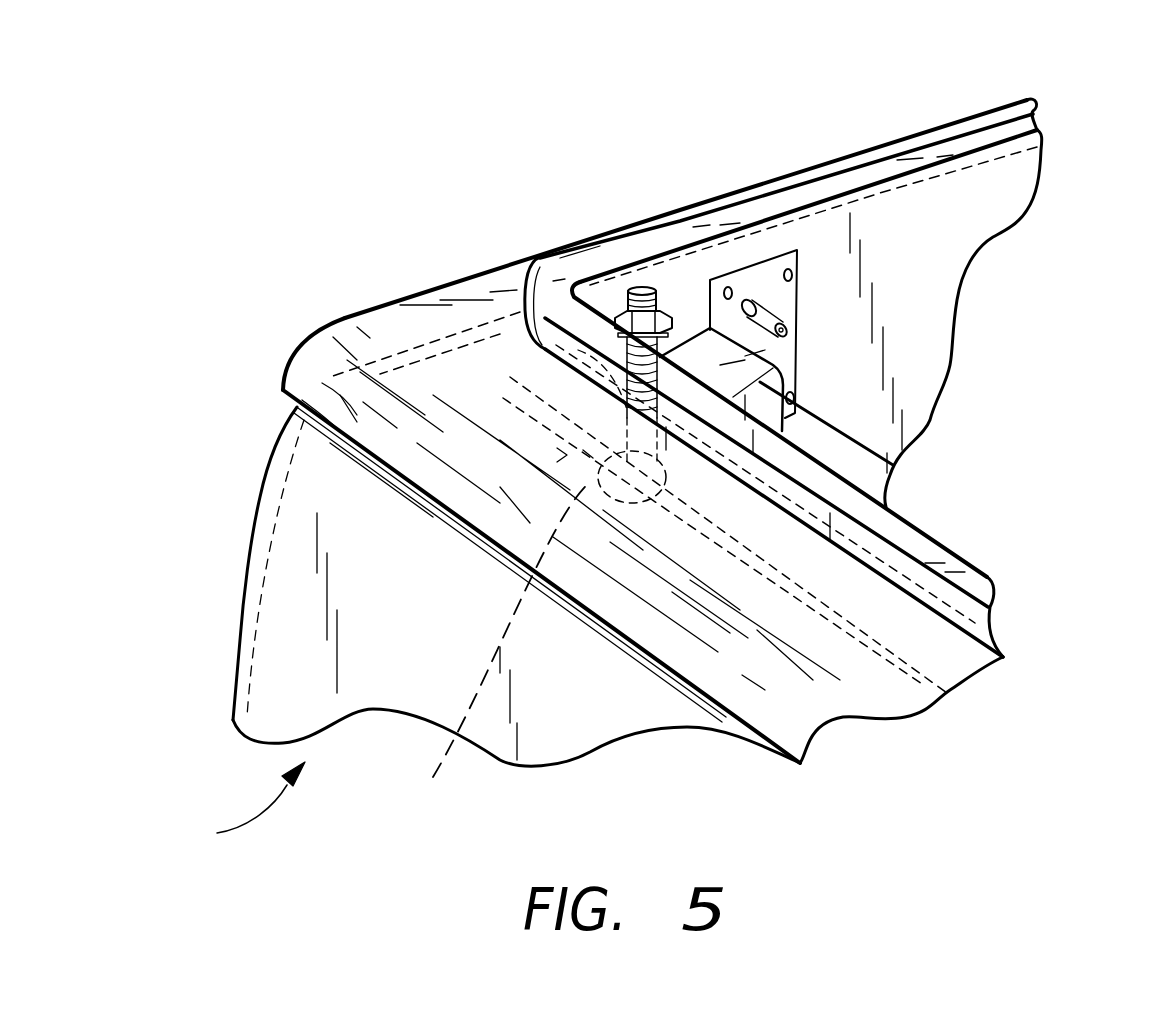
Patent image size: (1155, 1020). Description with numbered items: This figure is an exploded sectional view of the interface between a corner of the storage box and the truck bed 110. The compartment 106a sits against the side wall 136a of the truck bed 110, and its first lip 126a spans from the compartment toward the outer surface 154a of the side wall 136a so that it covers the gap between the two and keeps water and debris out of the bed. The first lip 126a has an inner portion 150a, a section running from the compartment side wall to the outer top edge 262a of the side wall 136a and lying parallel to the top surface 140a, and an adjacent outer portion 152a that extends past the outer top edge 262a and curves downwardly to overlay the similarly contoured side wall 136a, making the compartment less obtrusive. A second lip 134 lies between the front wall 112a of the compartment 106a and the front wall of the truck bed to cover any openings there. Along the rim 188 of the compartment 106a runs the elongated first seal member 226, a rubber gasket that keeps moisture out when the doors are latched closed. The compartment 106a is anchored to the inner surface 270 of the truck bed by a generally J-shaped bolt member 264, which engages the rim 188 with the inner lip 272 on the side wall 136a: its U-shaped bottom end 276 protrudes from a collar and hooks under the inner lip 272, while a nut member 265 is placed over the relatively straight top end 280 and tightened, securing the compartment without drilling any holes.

The truck bed 110 is at (232, 804).
The compartment 106a is at (993, 195).
The front wall 112a is at (910, 186).
The first lip 126a is at (821, 732).
The second lip 134 is at (573, 246).
The side wall 136a is at (340, 533).
The top surface 140a is at (410, 374).
The inner portion 150a is at (474, 383).
The outer portion 152a is at (750, 690).
The outer surface 154a is at (322, 383).
The rim 188 is at (540, 266).
The first seal member 226 is at (852, 177).
The outer top edge 262a is at (338, 314).
The bolt member 264 is at (653, 440).
The nut member 265 is at (614, 309).
The inner surface 270 is at (448, 758).
The inner lip 272 is at (647, 523).
The U-shaped bottom end 276 is at (585, 478).
The top end 280 is at (643, 289).